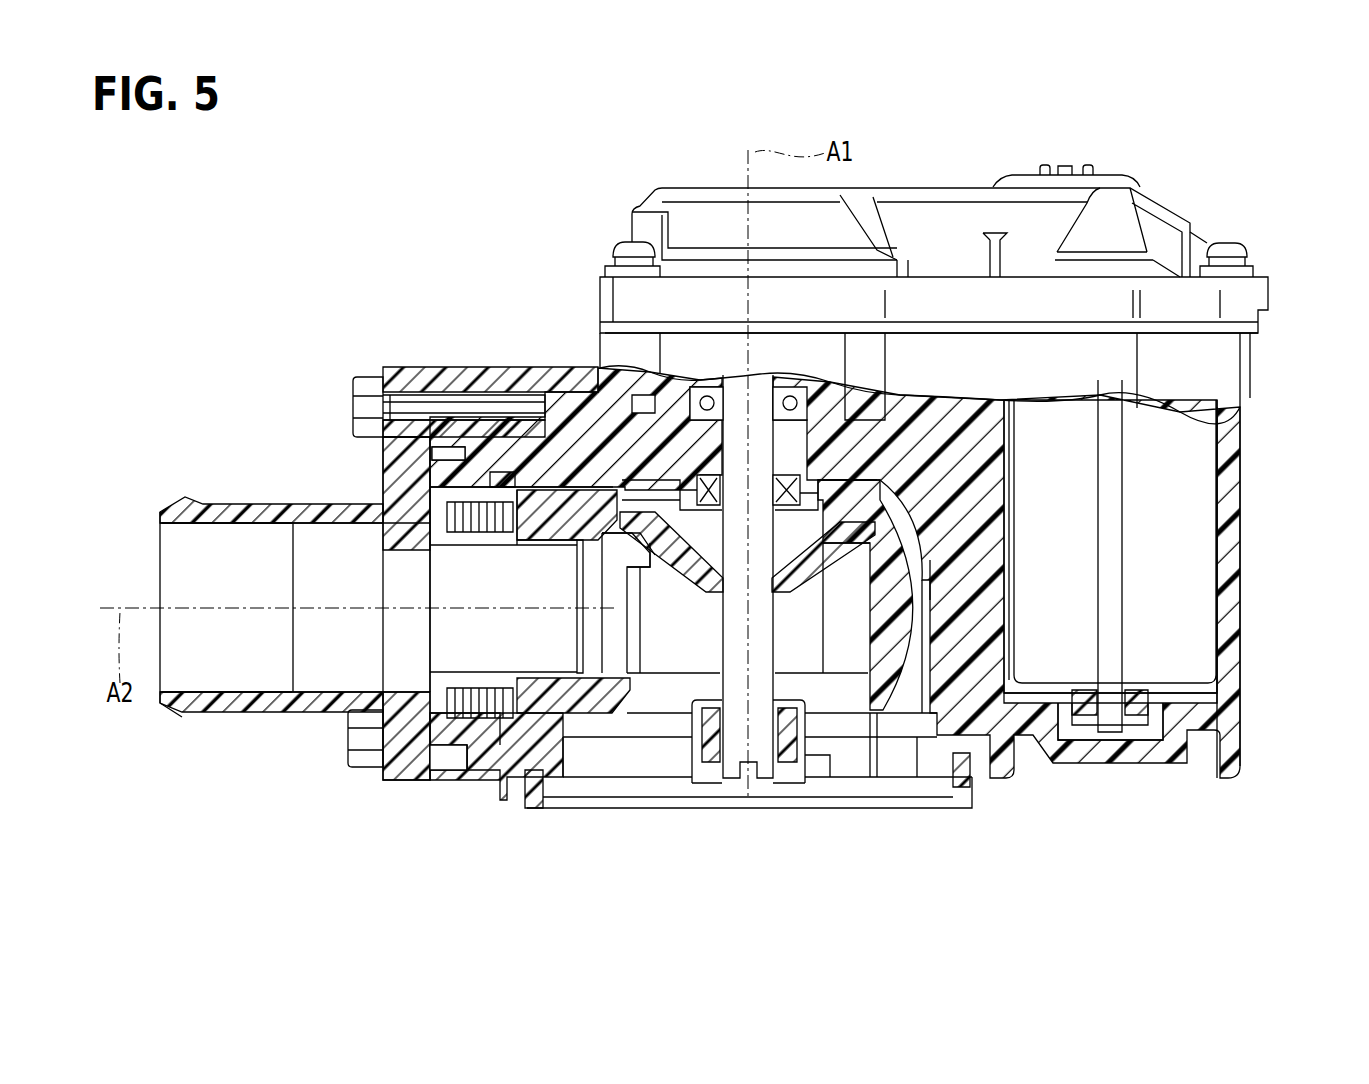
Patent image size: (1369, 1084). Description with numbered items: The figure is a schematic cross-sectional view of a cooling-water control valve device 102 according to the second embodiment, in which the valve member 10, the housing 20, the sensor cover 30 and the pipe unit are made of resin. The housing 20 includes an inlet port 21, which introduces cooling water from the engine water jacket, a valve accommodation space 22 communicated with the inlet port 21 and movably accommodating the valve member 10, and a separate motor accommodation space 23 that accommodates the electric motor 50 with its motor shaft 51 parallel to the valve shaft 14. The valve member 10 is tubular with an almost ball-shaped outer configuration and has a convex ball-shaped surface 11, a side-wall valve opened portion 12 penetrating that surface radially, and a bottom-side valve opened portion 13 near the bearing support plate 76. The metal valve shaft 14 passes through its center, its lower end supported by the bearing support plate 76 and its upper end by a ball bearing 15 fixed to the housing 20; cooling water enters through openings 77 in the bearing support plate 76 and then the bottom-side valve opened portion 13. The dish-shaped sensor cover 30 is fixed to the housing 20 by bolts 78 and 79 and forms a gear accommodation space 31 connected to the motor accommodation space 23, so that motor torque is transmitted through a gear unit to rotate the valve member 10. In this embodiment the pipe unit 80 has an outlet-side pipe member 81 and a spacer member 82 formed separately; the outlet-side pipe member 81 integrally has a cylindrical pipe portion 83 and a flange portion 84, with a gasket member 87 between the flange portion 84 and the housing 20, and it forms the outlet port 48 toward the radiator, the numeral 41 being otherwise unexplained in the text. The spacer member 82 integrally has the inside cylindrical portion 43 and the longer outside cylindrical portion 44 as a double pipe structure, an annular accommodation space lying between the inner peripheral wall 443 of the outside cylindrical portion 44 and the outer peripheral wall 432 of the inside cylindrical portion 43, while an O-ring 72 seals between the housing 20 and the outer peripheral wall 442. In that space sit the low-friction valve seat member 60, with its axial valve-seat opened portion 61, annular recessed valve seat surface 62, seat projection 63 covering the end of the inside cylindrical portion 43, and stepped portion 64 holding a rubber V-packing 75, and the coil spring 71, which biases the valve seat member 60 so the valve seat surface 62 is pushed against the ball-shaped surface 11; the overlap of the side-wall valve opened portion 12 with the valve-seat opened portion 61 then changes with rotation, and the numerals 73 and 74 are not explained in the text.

The cooling-water control valve device 102 is at (1243, 157).
The valve member 10 is at (908, 700).
The ball-shaped surface 11 is at (914, 576).
The side-wall valve opened portion 12 is at (700, 650).
The bottom-side valve opened portion 13 is at (850, 707).
The valve shaft 14 is at (760, 755).
The ball bearing 15 is at (707, 392).
The housing 20 is at (472, 370).
The inlet port 21 is at (956, 826).
The valve accommodation space 22 is at (930, 700).
The motor accommodation space 23 is at (1216, 446).
The sensor cover 30 is at (712, 226).
The gear accommodation space 31 is at (1120, 307).
The pipe passage 41 is at (210, 652).
The inside cylindrical portion 43 is at (562, 520).
The outside cylindrical portion 44 is at (590, 500).
The outlet port 48 is at (155, 528).
The electric motor 50 is at (1190, 506).
The motor shaft 51 is at (1112, 623).
The valve seat member 60 is at (608, 700).
The valve-seat opened portion 61 is at (672, 650).
The valve seat surface 62 is at (650, 648).
The seat projection 63 is at (628, 645).
The stepped portion 64 is at (447, 530).
The spring 71 is at (483, 760).
The O-ring 72 is at (500, 760).
The upper bolt 73 is at (364, 378).
The lower bolt 74 is at (357, 742).
The V-packing 75 is at (535, 738).
The bearing support plate 76 is at (822, 765).
The openings 77 is at (876, 790).
The bolt 78 is at (622, 246).
The bolt 79 is at (1228, 246).
The pipe unit 80 is at (340, 882).
The outlet-side pipe member 81 is at (280, 715).
The spacer member 82 is at (393, 762).
The cylindrical pipe portion 83 is at (300, 505).
The flange portion 84 is at (405, 368).
The gasket member 87 is at (455, 765).
The outer peripheral wall 432 is at (580, 678).
The outer peripheral wall 442 is at (546, 810).
The inner peripheral wall 443 is at (533, 488).